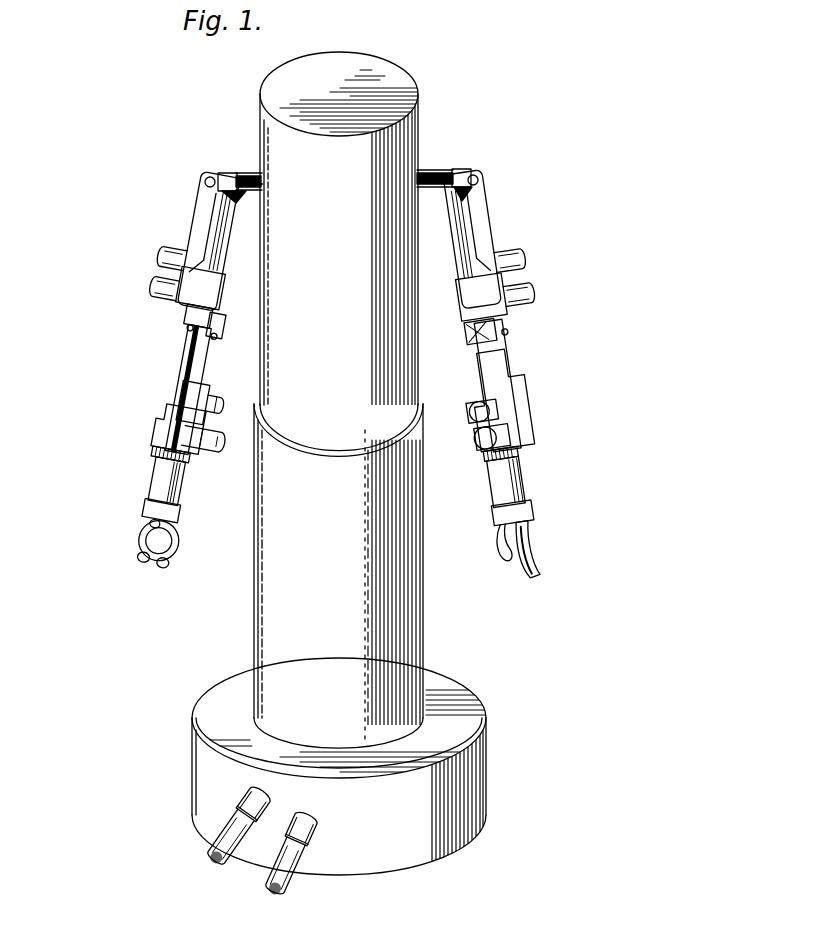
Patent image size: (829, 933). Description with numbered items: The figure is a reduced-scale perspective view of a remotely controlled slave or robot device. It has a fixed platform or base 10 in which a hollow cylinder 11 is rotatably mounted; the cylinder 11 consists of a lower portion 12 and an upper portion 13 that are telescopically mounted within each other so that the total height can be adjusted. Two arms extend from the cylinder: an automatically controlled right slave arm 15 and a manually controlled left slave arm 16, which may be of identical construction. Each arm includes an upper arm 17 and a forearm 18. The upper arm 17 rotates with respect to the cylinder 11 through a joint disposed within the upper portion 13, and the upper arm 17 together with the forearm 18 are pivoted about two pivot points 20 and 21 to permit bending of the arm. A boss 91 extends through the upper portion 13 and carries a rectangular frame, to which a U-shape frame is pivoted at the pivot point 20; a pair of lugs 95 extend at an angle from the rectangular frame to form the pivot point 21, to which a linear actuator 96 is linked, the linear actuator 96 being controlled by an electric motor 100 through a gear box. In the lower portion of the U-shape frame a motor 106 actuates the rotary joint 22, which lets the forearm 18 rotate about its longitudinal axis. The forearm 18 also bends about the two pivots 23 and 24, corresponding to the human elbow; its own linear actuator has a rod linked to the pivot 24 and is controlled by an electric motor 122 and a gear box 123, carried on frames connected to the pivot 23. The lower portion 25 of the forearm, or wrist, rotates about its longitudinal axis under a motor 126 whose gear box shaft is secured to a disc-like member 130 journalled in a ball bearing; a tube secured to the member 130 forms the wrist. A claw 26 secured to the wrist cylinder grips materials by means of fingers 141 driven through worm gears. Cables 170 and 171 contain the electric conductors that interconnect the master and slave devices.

The base 10 is at (370, 820).
The cylinder 11 is at (406, 611).
The lower portion 12 is at (300, 583).
The upper portion 13 is at (320, 180).
The right slave arm 15 is at (180, 328).
The left slave arm 16 is at (548, 312).
The upper arm 17 is at (198, 221).
The forearm 18 is at (160, 415).
The pivot point 20 is at (206, 182).
The pivot point 21 is at (226, 172).
The rotary joint 22 is at (188, 311).
The pivot 23 is at (190, 327).
The pivot 24 is at (476, 344).
The lower portion of the forearm 25 is at (156, 476).
The claw 26 is at (138, 544).
The boss 91 is at (258, 183).
The lugs 95 is at (247, 178).
The linear actuator 96 is at (218, 249).
The electric motor 100 is at (168, 255).
The motor 106 is at (160, 286).
The electric motor 122 is at (228, 407).
The gear box 123 is at (184, 393).
The motor 126 is at (212, 451).
The disc-like member 130 is at (154, 453).
The fingers 141 is at (143, 531).
The cable 170 is at (220, 841).
The cable 171 is at (268, 888).